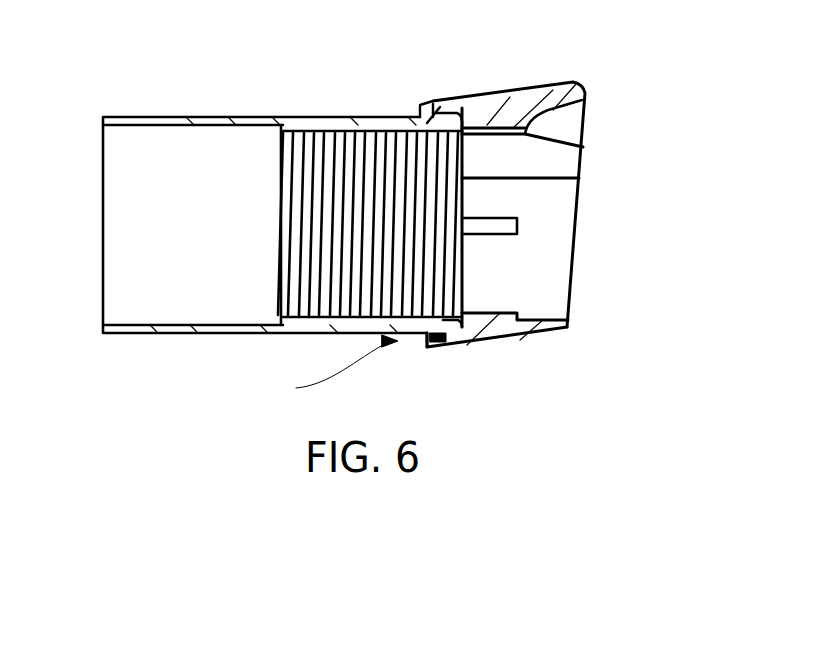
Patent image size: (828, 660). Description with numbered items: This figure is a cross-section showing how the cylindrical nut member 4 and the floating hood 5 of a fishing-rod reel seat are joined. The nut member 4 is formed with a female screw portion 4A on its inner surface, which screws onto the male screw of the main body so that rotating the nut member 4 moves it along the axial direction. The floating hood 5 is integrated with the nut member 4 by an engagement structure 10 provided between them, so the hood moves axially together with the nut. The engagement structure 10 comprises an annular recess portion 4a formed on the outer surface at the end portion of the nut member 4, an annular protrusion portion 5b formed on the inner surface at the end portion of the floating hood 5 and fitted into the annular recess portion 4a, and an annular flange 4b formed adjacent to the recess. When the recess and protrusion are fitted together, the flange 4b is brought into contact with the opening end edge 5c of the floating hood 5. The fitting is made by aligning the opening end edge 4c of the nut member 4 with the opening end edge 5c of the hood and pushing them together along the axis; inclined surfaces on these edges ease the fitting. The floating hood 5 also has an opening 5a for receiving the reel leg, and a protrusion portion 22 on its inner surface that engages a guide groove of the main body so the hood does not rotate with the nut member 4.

The nut member 4 is at (181, 117).
The female screw portion 4A is at (318, 130).
The annular recess portion 4a is at (438, 112).
The annular flange 4b is at (424, 104).
The opening end edge 4c is at (462, 325).
The floating hood 5 is at (498, 96).
The opening 5a is at (586, 112).
The annular protrusion portion 5b is at (437, 346).
The opening end edge 5c is at (420, 340).
The engagement structure 10 is at (328, 369).
The protrusion portion 22 is at (520, 222).